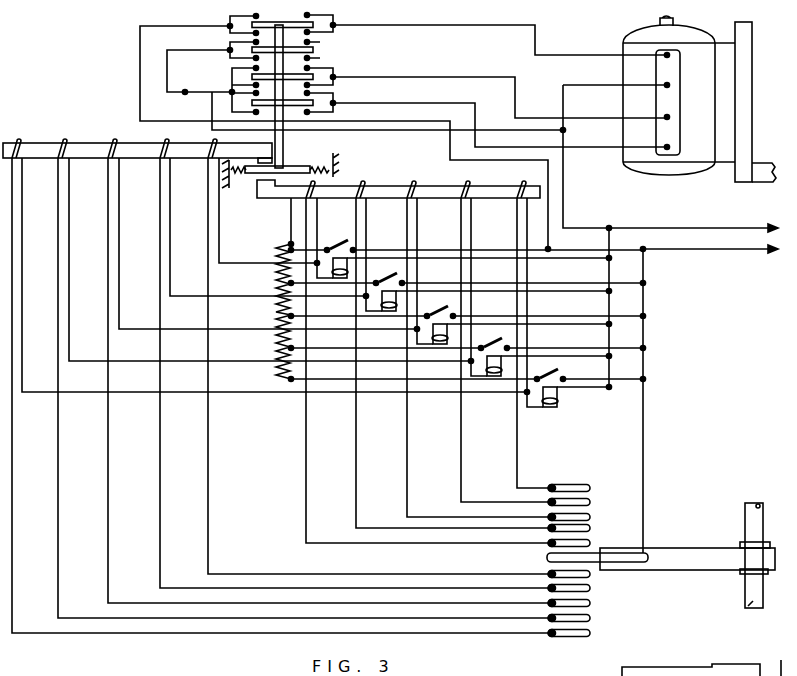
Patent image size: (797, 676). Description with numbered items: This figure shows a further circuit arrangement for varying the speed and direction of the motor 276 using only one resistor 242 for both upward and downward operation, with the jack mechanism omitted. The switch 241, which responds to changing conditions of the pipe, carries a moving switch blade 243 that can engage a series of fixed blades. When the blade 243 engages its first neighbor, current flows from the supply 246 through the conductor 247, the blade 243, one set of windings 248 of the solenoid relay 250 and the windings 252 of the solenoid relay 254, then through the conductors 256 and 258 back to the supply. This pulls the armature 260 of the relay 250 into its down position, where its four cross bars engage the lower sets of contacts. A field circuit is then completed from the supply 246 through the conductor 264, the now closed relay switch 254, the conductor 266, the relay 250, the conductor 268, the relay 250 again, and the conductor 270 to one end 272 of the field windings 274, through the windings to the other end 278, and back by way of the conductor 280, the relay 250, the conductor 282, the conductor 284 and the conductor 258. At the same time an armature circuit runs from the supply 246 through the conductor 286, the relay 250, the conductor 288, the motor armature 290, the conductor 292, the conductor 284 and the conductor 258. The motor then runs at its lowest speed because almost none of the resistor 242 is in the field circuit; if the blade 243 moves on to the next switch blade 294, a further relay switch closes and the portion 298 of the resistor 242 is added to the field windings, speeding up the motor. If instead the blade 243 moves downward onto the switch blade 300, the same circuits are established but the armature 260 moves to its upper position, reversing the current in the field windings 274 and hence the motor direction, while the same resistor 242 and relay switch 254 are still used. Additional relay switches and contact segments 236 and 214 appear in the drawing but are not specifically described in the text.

The contact segment 214 is at (590, 543).
The relay 236 is at (395, 283).
The switch 241 is at (702, 575).
The resistor 242 is at (278, 312).
The switch blade 243 is at (598, 571).
The supply 246 is at (710, 242).
The conductor 247 is at (643, 411).
The set of windings of solenoid relay 248 is at (317, 182).
The solenoid relay 250 is at (292, 157).
The windings of solenoid relay 252 is at (347, 268).
The solenoid relay / relay switch 254 is at (350, 219).
The conductor 256 is at (553, 266).
The conductor 258 is at (637, 227).
The armature of solenoid relay 260 is at (330, 41).
The conductor 264 is at (507, 248).
The conductor 266 is at (352, 66).
The conductor 268 is at (167, 66).
The conductor 270 is at (433, 77).
The end of field windings 272 is at (669, 115).
The field windings 274 is at (670, 133).
The motor 276 is at (690, 35).
The other end of field windings 278 is at (667, 156).
The conductor 280 is at (607, 147).
The conductor 282 is at (212, 106).
The conductor 284 is at (563, 174).
The conductor 286 is at (140, 70).
The conductor 288 is at (537, 38).
The armature of electric motor 290 is at (668, 72).
The conductor 292 is at (563, 85).
The switch blade 294 is at (591, 517).
The portion of resistor 298 is at (270, 247).
The switch blade 300 is at (591, 578).